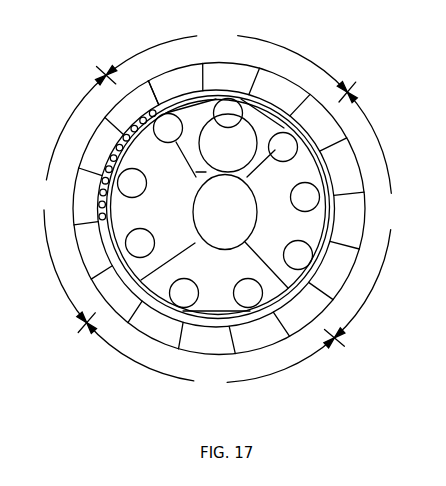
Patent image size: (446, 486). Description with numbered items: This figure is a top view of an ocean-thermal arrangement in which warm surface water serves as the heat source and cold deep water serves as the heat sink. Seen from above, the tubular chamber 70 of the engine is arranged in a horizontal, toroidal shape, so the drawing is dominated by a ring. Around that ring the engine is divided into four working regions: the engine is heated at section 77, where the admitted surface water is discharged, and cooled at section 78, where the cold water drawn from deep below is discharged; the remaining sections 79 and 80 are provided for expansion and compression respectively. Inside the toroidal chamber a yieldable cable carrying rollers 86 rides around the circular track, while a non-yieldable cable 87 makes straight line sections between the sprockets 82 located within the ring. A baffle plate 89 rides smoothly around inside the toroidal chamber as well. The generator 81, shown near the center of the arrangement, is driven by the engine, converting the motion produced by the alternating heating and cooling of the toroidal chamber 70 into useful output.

The tubular chamber 70 is at (219, 209).
The heating section 77 is at (368, 210).
The cooling section 78 is at (70, 203).
The expansion section 79 is at (222, 59).
The compression section 80 is at (216, 357).
The generator 81 is at (248, 156).
The sprockets 82 is at (150, 168).
The rollers 86 is at (142, 117).
The non-yieldable cable 87 is at (113, 213).
The baffle plate 89 is at (151, 92).